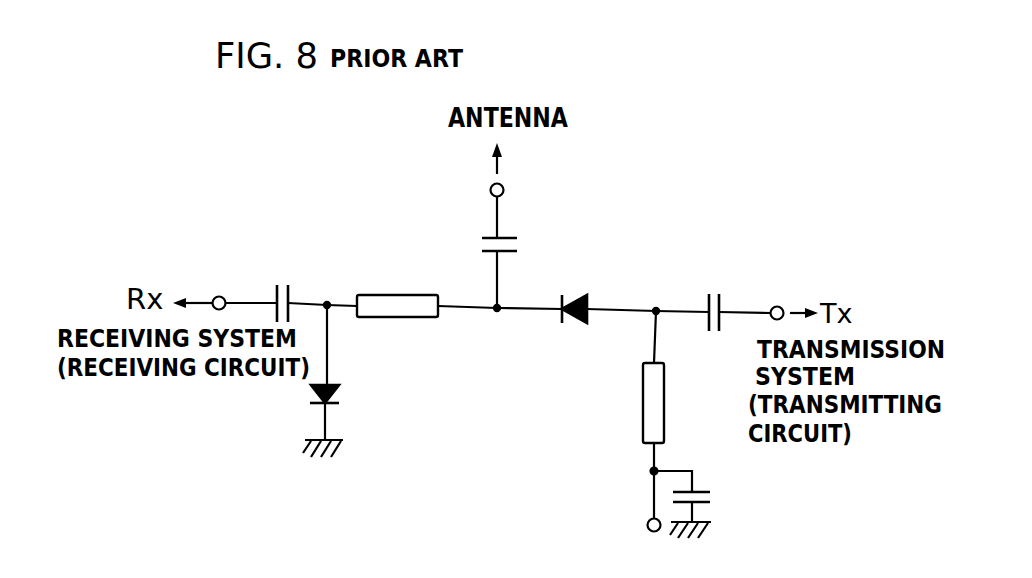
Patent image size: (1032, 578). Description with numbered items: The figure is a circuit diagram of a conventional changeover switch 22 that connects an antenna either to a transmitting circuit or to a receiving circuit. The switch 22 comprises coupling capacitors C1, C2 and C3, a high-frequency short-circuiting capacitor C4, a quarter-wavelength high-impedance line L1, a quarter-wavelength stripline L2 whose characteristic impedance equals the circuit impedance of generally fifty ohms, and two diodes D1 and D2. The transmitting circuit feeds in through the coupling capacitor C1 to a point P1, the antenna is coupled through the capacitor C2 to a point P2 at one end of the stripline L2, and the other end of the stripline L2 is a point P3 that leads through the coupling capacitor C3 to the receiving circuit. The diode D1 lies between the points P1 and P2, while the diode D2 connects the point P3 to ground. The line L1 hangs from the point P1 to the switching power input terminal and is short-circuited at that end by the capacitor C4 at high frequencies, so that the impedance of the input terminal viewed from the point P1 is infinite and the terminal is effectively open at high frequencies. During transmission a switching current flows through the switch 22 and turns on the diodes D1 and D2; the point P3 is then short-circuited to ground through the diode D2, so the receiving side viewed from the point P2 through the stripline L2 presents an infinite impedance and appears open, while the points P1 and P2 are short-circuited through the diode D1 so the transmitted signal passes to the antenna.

The changeover switch 22 is at (376, 203).
The coupling capacitor C1 is at (722, 300).
The coupling capacitor C2 is at (512, 238).
The coupling capacitor C3 is at (277, 291).
The high-frequency short-circuiting capacitor C4 is at (700, 485).
The quarter-wavelength high-impedance line L1 is at (664, 405).
The quarter-wavelength stripline L2 is at (406, 295).
The diode D1 is at (572, 325).
The diode D2 is at (341, 396).
The point P1 is at (656, 277).
The point P2 is at (497, 330).
The point P3 is at (327, 276).